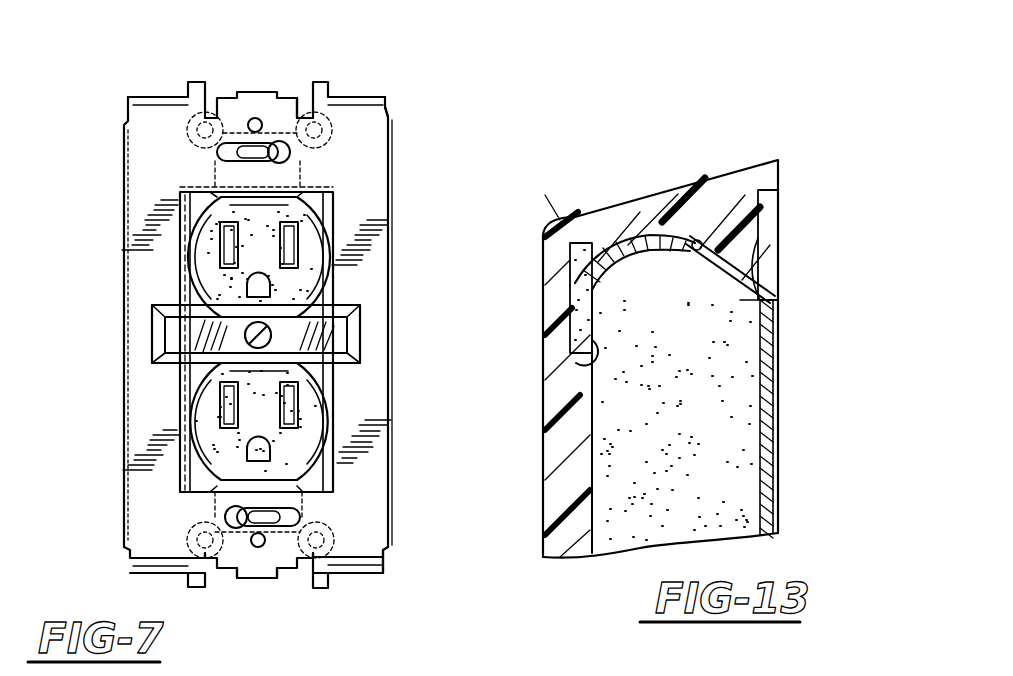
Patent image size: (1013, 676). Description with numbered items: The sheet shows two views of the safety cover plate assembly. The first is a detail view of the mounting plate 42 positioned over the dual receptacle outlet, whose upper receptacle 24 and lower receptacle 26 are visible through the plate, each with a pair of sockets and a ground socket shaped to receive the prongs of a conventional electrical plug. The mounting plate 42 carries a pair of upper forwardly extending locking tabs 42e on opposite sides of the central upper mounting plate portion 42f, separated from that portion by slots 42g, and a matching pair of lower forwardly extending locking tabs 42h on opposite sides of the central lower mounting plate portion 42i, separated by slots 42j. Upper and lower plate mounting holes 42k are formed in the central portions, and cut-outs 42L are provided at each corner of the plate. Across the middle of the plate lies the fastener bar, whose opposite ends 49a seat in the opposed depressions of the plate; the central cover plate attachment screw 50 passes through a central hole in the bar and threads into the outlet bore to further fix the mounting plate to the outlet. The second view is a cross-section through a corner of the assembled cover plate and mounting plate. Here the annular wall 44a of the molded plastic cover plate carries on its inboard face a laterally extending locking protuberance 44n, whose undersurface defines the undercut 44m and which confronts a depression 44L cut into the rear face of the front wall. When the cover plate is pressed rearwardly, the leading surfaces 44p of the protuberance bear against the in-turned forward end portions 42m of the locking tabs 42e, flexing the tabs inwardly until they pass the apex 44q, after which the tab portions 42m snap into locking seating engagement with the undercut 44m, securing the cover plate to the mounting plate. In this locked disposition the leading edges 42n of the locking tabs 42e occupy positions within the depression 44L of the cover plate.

In FIG. 7, the mounting plate 42 is at (118, 222).
In FIG. 13, the mounting plate 42 is at (795, 475).
In FIG. 7, the upper forwardly extending locking tabs 42e is at (130, 98).
In FIG. 13, the upper forwardly extending locking tabs 42e is at (682, 263).
In FIG. 7, the central upper mounting plate portion 42f is at (258, 92).
In FIG. 7, the slots 42g is at (303, 82).
In FIG. 7, the lower forwardly extending locking tabs 42h is at (362, 574).
In FIG. 7, the central lower mounting plate portion 42i is at (263, 580).
In FIG. 7, the slots 42j is at (207, 560).
In FIG. 7, the plate mounting holes 42k is at (260, 124).
In FIG. 7, the cut-outs 42L is at (390, 108).
In FIG. 13, the in-turned forward end portions of the locking tabs 42m is at (605, 240).
In FIG. 13, the leading edges of the locking tabs 42n is at (570, 290).
In FIG. 7, the upper receptacle 24 is at (332, 272).
In FIG. 7, the lower receptacle 26 is at (200, 405).
In FIG. 7, the ends of fastener bar 49a is at (165, 338).
In FIG. 7, the central cover plate attachment screw 50 is at (272, 340).
In FIG. 13, the annular wall 44a is at (696, 236).
In FIG. 13, the undercut 44m is at (704, 243).
In FIG. 13, the locking protuberance 44n is at (790, 206).
In FIG. 13, the leading surfaces of the locking protuberances 44p is at (762, 237).
In FIG. 13, the apex of the protuberance 44q is at (760, 274).
In FIG. 13, the depressions 44L is at (583, 357).